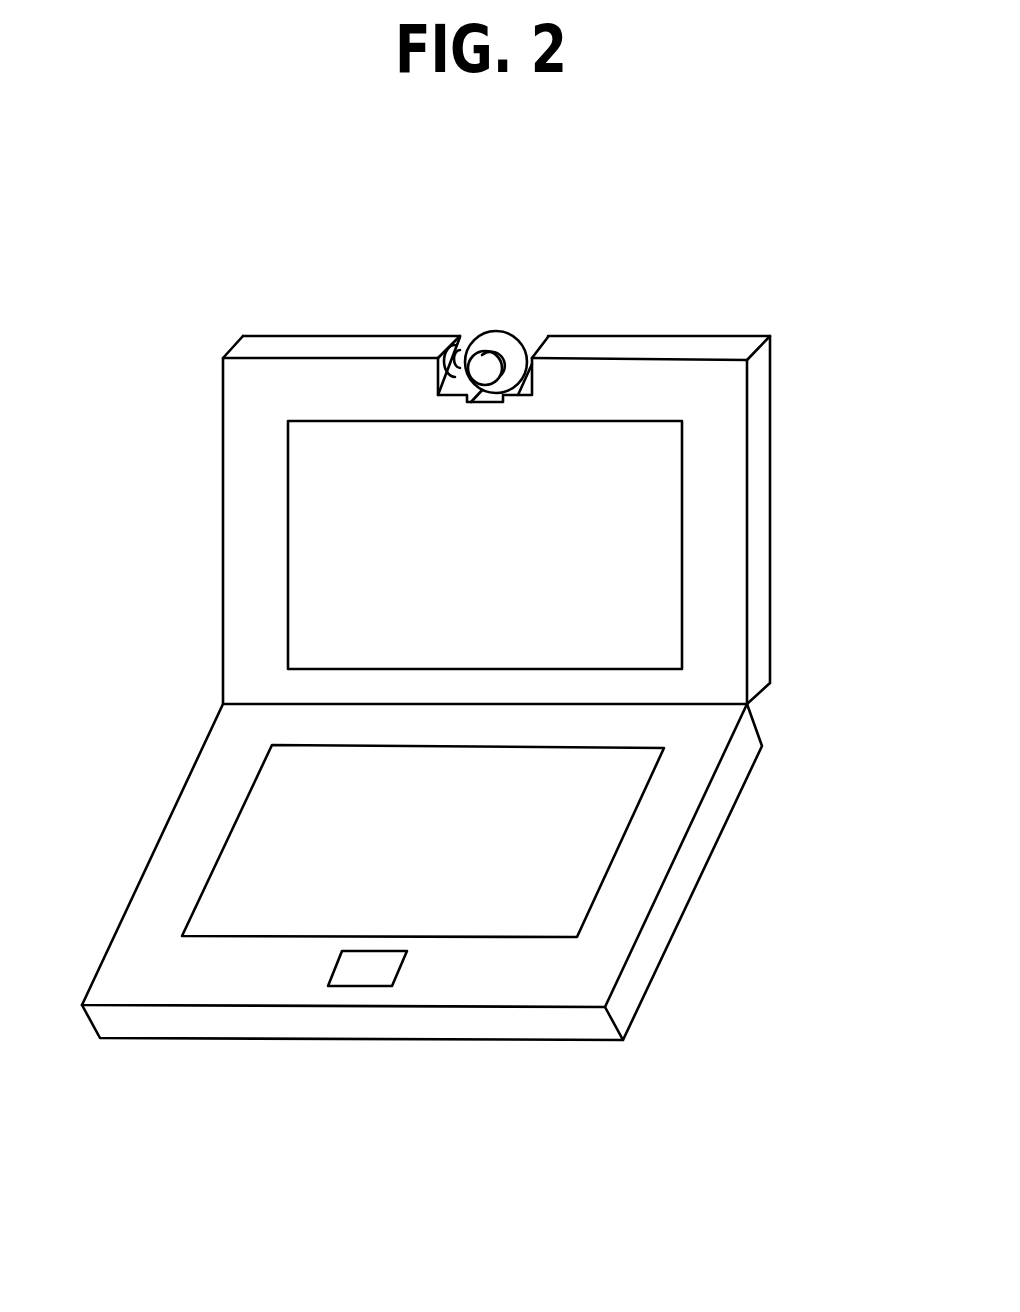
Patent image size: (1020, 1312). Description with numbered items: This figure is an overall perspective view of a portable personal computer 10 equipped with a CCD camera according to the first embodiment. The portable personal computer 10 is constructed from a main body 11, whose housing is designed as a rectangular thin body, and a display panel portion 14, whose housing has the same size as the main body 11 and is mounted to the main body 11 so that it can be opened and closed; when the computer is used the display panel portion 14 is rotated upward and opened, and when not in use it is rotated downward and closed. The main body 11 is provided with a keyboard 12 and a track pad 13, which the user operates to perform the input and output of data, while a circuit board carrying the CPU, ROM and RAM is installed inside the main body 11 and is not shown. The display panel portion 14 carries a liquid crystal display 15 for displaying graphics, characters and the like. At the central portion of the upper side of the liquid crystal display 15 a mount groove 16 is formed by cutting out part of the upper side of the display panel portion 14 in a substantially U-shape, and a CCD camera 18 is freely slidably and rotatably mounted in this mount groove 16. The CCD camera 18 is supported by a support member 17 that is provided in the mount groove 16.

The portable personal computer 10 is at (636, 276).
The main body 11 is at (750, 814).
The keyboard 12 is at (592, 839).
The track pad 13 is at (370, 972).
The display panel portion 14 is at (778, 457).
The liquid crystal display 15 is at (317, 590).
The mount groove 16 is at (445, 373).
The support member 17 is at (455, 350).
The CCD camera 18 is at (503, 343).